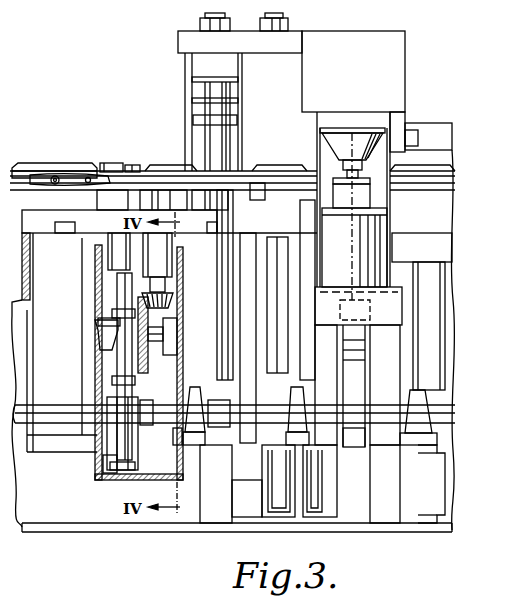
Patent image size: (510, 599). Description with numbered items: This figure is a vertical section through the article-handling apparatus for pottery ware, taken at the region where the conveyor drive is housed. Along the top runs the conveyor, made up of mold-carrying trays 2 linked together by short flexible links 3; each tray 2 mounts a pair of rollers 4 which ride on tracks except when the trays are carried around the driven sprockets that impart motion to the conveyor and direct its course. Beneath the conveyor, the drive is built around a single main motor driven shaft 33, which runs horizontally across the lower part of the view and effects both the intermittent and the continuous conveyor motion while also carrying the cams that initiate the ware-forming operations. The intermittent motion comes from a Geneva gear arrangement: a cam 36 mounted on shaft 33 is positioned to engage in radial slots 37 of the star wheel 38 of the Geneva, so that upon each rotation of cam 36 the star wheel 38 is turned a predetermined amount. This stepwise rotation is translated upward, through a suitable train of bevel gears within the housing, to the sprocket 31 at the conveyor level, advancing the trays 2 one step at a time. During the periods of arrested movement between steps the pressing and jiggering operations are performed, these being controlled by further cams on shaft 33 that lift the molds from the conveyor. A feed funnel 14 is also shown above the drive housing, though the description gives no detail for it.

The mold-carrying tray 2 is at (38, 177).
The roller 4 is at (58, 178).
The flexible link 3 is at (121, 167).
The sprocket 31 is at (129, 172).
The funnel feed 14 is at (350, 118).
The radial slot 37 is at (122, 311).
The star wheel 38 is at (123, 353).
The cam 36 is at (125, 408).
The main motor driven shaft 33 is at (443, 411).